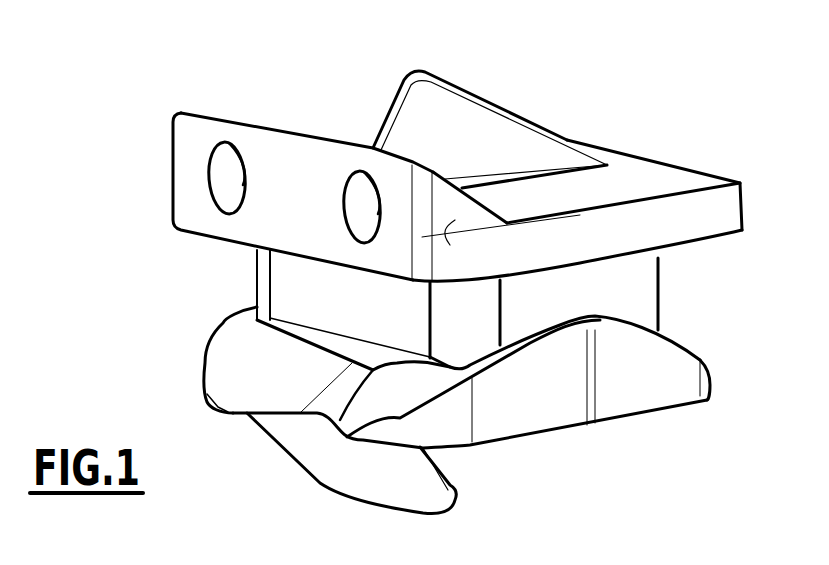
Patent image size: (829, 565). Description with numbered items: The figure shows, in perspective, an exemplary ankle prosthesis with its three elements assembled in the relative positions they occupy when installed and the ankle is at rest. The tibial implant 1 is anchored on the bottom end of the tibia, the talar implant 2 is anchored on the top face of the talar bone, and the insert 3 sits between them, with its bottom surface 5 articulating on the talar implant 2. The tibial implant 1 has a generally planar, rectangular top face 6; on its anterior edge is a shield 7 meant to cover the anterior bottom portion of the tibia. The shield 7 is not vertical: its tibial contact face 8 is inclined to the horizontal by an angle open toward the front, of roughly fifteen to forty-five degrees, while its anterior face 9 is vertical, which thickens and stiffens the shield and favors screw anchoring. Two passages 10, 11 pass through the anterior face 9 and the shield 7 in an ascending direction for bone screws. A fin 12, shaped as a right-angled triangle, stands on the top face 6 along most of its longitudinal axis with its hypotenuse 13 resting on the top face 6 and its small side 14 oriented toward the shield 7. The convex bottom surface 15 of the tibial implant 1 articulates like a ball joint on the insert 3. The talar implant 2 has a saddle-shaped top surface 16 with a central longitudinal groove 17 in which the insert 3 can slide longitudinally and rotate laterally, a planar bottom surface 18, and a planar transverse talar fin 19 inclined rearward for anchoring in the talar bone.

The tibial implant 1 is at (625, 133).
The talar implant 2 is at (683, 420).
The insert 3 is at (697, 322).
The bottom surface 5 is at (553, 330).
The top face 6 is at (647, 183).
The shield 7 is at (240, 118).
The tibial contact face 8 is at (483, 177).
The anterior face 9 is at (290, 173).
The passage 10 is at (355, 213).
The passage 11 is at (220, 186).
The fin 12 is at (447, 118).
The hypotenuse 13 is at (540, 167).
The small side 14 is at (387, 125).
The bottom surface 15 is at (693, 247).
The saddle-shaped top surface 16 is at (233, 350).
The central longitudinal groove 17 is at (330, 400).
The bottom surface 18 is at (597, 427).
The transverse talar fin 19 is at (360, 477).